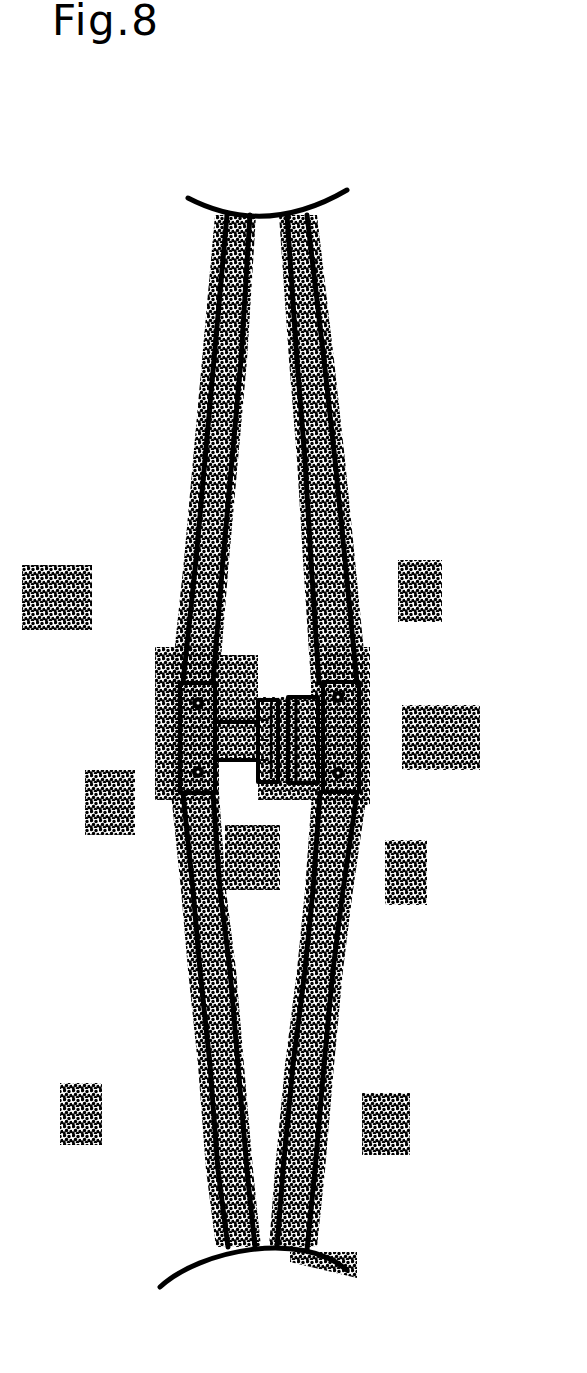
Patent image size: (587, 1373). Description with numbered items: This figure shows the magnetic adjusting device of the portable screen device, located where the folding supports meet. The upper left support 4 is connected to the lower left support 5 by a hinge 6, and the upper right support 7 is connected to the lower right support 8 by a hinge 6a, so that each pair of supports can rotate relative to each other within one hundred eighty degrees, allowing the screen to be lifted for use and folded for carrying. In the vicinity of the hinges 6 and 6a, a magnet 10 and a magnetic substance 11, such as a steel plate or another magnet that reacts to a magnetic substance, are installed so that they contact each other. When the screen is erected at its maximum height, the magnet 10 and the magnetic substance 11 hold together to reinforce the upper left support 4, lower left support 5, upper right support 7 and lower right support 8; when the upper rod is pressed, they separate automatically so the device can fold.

The upper left support 4 is at (197, 574).
The lower left support 5 is at (215, 1092).
The hinge 6 is at (188, 740).
The hinge 6a is at (343, 743).
The upper right support 7 is at (345, 583).
The lower right support 8 is at (310, 1113).
The magnet 10 is at (262, 783).
The magnetic substance 11 is at (300, 787).